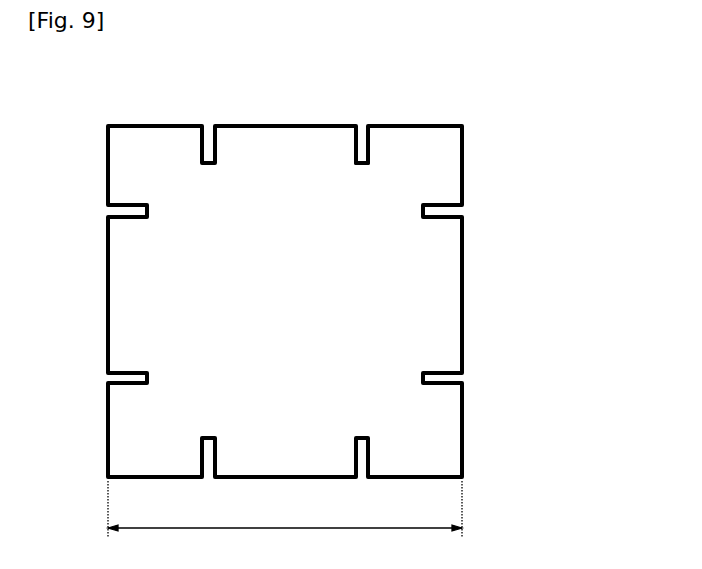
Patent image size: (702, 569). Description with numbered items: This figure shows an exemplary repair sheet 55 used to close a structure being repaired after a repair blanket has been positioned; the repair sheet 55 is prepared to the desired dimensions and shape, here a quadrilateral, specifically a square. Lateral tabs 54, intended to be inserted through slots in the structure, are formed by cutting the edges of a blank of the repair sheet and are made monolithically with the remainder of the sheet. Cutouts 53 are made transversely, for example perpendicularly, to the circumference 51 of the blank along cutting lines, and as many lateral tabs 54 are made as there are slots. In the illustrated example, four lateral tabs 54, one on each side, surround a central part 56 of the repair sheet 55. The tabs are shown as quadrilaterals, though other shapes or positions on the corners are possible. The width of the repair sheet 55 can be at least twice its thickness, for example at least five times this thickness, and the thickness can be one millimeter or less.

The circumference 51 is at (168, 122).
The cutouts 53 is at (357, 147).
The lateral tabs 54 is at (283, 143).
The repair sheet 55 is at (515, 145).
The central part 56 is at (257, 290).